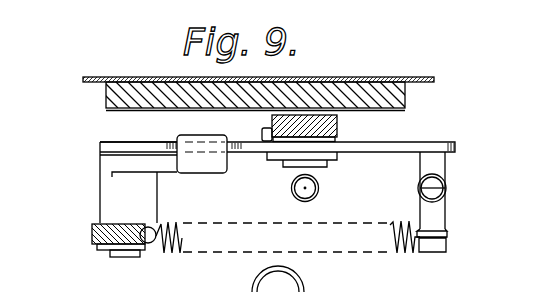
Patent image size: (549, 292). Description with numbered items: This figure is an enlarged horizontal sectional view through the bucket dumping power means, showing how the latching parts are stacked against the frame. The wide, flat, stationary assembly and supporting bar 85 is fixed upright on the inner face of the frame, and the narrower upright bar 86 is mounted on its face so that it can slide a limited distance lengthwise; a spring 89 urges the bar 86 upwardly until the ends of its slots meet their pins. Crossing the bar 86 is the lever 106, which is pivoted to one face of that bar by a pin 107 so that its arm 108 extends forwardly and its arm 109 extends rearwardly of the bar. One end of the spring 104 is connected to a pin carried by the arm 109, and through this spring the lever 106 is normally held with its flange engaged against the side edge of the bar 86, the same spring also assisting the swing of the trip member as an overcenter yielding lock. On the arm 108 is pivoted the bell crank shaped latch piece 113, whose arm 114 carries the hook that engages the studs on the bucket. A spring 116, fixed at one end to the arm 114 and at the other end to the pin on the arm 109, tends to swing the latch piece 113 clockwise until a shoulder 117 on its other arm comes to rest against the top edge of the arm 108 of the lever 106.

The assembly and supporting bar 85 is at (106, 97).
The bar 86 is at (338, 126).
The spring 89 is at (296, 198).
The spring 104 is at (418, 190).
The lever 106 is at (411, 140).
The pin 107 is at (282, 166).
The arm 108 is at (147, 138).
The arm 109 is at (372, 148).
The latch piece 113 is at (97, 192).
The arm 114 is at (92, 238).
The spring 116 is at (178, 286).
The shoulder 117 is at (204, 160).